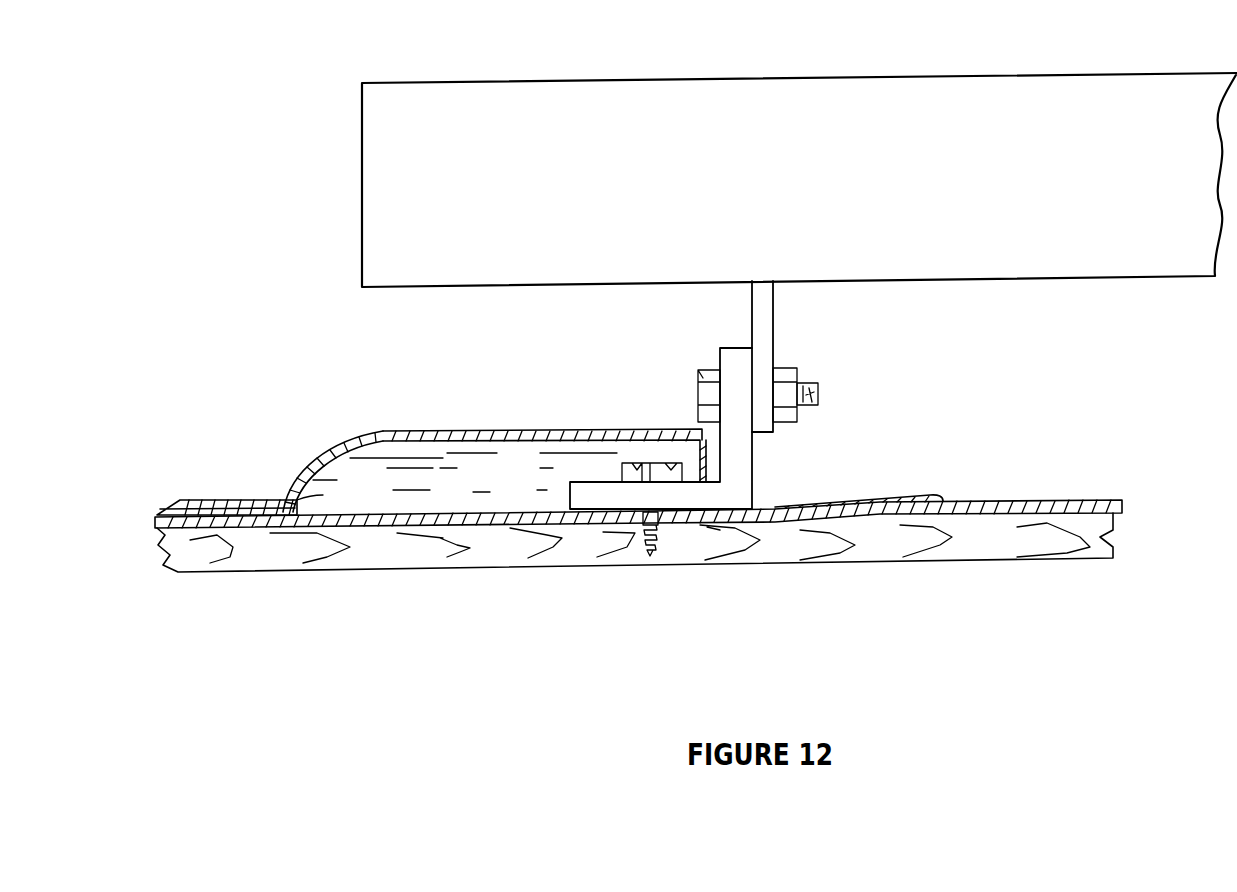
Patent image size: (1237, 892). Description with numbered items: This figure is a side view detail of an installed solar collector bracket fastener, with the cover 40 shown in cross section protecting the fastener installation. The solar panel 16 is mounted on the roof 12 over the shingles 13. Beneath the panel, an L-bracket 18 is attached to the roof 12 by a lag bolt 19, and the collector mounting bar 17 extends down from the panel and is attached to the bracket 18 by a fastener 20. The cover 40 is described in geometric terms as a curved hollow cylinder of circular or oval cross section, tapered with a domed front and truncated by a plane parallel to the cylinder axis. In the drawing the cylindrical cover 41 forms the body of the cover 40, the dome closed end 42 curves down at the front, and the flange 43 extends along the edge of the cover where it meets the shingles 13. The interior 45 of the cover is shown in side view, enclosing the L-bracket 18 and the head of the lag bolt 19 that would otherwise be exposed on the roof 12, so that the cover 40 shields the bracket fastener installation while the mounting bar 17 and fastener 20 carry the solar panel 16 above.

The roof 12 is at (1113, 550).
The shingles 13 is at (920, 483).
The solar panel 16 is at (1038, 67).
The collector mounting bar 17 is at (765, 312).
The L-bracket 18 is at (738, 478).
The lag bolt 19 is at (667, 533).
The fastener 20 is at (807, 375).
The cover 40 is at (431, 481).
The cylindrical cover 41 is at (472, 428).
The dome closed end 42 is at (307, 458).
The flange 43 is at (257, 520).
The interior 45 is at (512, 488).